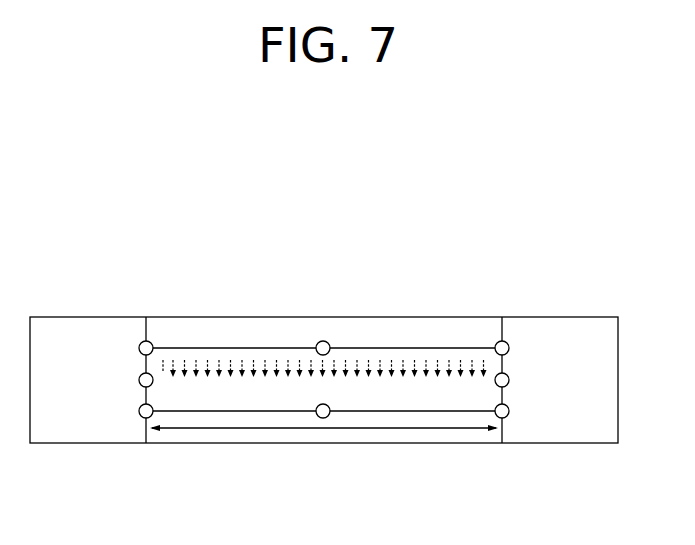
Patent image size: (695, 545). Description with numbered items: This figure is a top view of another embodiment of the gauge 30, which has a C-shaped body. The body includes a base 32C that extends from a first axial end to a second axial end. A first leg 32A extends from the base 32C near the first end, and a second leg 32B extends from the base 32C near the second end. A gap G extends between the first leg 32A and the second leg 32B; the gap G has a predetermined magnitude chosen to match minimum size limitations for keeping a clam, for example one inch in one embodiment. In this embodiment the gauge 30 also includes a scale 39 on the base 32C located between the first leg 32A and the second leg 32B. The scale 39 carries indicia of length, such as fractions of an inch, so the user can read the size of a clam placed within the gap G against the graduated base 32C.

The gauge 30 is at (547, 207).
The first leg 32A is at (578, 338).
The second leg 32B is at (67, 333).
The base 32C is at (285, 328).
The scale 39 is at (415, 400).
The gap G is at (246, 432).